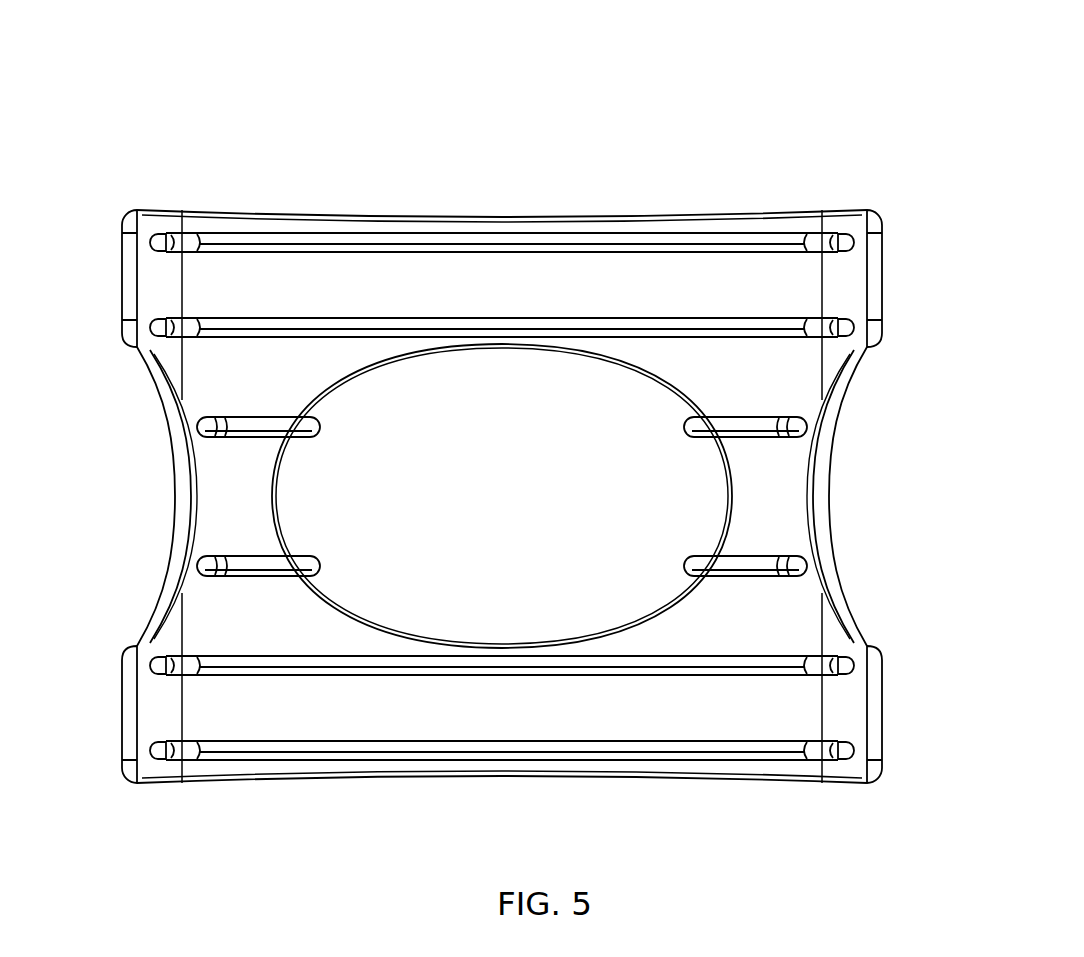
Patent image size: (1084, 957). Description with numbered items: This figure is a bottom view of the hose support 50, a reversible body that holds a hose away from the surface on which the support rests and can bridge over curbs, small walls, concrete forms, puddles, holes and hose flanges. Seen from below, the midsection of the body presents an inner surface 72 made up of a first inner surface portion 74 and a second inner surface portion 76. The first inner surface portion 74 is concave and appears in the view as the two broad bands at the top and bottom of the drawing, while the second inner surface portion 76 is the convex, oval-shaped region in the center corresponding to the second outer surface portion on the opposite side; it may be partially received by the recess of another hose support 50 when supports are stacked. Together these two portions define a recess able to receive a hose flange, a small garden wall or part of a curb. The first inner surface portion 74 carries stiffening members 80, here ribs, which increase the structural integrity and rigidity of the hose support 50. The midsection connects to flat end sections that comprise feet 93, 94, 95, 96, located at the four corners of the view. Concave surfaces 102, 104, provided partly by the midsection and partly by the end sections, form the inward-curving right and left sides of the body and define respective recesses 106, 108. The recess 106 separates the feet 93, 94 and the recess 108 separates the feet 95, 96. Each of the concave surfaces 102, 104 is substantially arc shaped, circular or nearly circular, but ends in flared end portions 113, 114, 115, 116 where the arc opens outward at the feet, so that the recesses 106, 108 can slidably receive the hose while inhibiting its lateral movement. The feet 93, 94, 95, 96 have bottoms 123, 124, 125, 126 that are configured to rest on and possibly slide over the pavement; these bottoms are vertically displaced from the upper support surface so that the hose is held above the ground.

The hose support 50 is at (792, 68).
The inner surface 72 is at (327, 195).
The first inner surface portion 74 is at (446, 295).
The second inner surface portion 76 is at (514, 519).
The stiffening members 80 is at (722, 230).
The bottom 126 is at (122, 252).
The foot 96 is at (122, 268).
The flared end portion 116 is at (113, 345).
The recess 108 is at (140, 488).
The concave surface 104 is at (152, 568).
The flared end portion 115 is at (112, 652).
The foot 95 is at (122, 698).
The bottom 125 is at (122, 738).
The bottom 124 is at (882, 252).
The foot 94 is at (882, 268).
The flared end portion 114 is at (891, 345).
The recess 106 is at (864, 488).
The concave surface 102 is at (852, 568).
The flared end portion 113 is at (892, 652).
The foot 93 is at (882, 698).
The bottom 123 is at (882, 738).